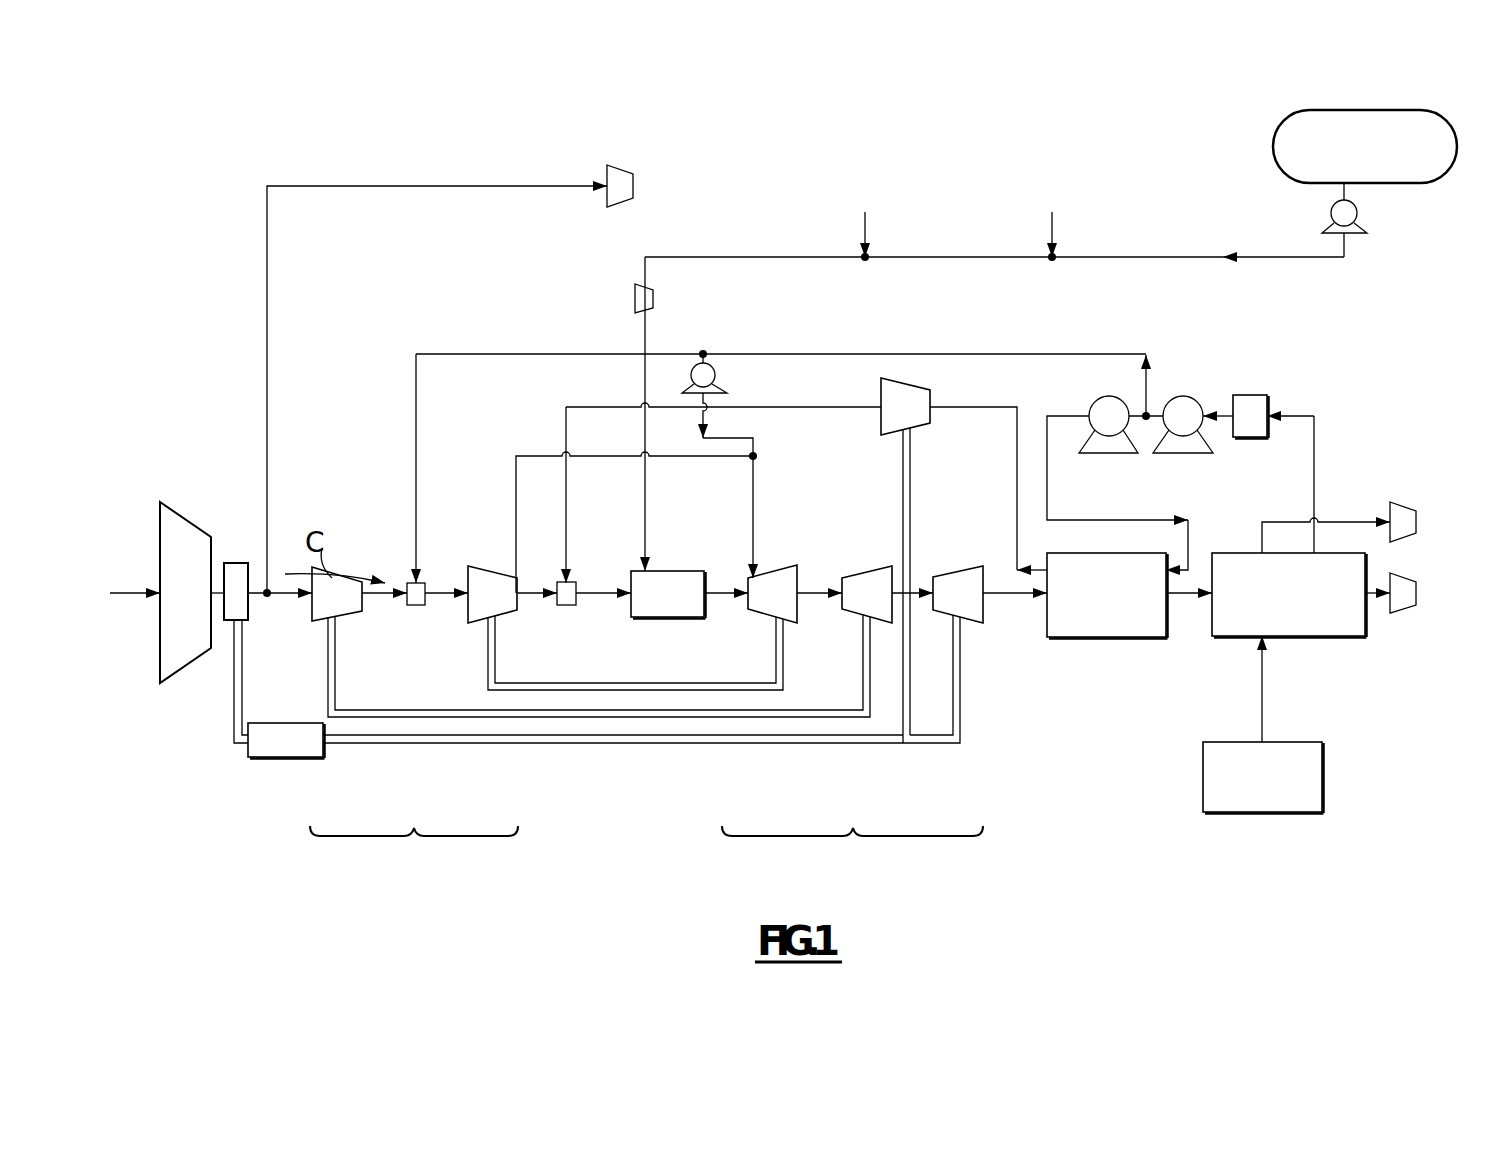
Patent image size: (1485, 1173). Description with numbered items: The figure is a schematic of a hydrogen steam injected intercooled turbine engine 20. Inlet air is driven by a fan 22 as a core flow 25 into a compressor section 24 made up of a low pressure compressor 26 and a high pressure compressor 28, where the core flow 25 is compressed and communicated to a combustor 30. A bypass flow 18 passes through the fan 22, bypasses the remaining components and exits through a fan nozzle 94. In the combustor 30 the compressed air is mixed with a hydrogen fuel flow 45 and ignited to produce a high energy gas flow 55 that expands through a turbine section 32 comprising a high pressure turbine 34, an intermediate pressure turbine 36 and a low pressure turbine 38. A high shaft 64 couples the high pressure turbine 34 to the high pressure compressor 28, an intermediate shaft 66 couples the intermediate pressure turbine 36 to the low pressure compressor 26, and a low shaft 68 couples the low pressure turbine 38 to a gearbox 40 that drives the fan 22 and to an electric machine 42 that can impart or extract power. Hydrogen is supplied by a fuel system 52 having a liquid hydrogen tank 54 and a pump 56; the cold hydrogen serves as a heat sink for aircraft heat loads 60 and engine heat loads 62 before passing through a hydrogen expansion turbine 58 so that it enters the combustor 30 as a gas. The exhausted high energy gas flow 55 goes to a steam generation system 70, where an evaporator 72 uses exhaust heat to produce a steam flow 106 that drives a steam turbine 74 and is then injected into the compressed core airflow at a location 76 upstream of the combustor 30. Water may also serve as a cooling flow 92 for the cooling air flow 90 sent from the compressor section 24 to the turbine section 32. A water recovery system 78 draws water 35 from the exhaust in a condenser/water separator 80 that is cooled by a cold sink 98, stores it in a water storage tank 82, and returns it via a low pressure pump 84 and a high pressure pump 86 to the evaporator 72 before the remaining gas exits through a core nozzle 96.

The bypass flow 18 is at (268, 370).
The hydrogen steam injected intercooled turbine engine 20 is at (265, 130).
The fan 22 is at (176, 657).
The compressor section 24 is at (414, 852).
The core flow 25 is at (397, 588).
The low pressure compressor 26 is at (350, 607).
The high pressure compressor 28 is at (505, 605).
The combustor 30 is at (668, 614).
The turbine section 32 is at (852, 852).
The high pressure turbine 34 is at (766, 607).
The water 35 is at (1316, 453).
The intermediate pressure turbine 36 is at (856, 608).
The low pressure turbine 38 is at (972, 610).
The gearbox 40 is at (244, 607).
The electric machine 42 is at (306, 750).
The hydrogen fuel flow 45 is at (646, 505).
The fuel system 52 is at (1205, 180).
The liquid hydrogen tank 54 is at (1405, 174).
The high energy gas flow 55 is at (722, 587).
The pump 56 is at (1350, 237).
The hydrogen expansion turbine 58 is at (654, 298).
The aircraft heat loads 60 is at (1052, 212).
The engine heat loads 62 is at (865, 212).
The high shaft 64 is at (549, 690).
The intermediate shaft 66 is at (571, 719).
The low shaft 68 is at (620, 745).
The steam generation system 70 is at (978, 400).
The evaporator 72 is at (1101, 629).
The steam turbine 74 is at (917, 420).
The steam injection location 76 is at (570, 583).
The water recovery system 78 is at (1355, 397).
The condenser/water separator 80 is at (1323, 624).
The water storage tank 82 is at (1244, 403).
The low pressure pump 84 is at (1180, 406).
The high pressure pump 86 is at (1108, 406).
The cooling air flow 90 is at (617, 457).
The cooling flow 92 is at (700, 362).
The fan nozzle 94 is at (622, 167).
The core nozzle 96 is at (1400, 604).
The cold sink 98 is at (1323, 775).
The steam flow 106 is at (566, 432).